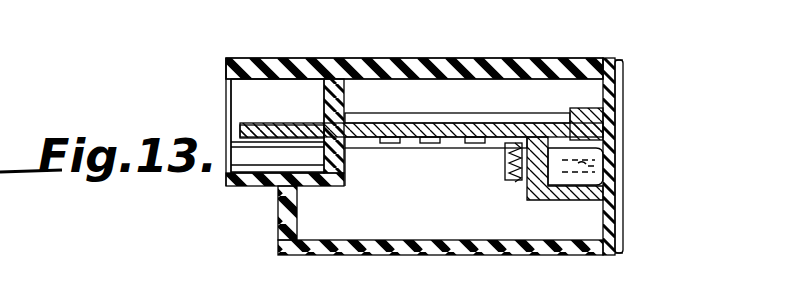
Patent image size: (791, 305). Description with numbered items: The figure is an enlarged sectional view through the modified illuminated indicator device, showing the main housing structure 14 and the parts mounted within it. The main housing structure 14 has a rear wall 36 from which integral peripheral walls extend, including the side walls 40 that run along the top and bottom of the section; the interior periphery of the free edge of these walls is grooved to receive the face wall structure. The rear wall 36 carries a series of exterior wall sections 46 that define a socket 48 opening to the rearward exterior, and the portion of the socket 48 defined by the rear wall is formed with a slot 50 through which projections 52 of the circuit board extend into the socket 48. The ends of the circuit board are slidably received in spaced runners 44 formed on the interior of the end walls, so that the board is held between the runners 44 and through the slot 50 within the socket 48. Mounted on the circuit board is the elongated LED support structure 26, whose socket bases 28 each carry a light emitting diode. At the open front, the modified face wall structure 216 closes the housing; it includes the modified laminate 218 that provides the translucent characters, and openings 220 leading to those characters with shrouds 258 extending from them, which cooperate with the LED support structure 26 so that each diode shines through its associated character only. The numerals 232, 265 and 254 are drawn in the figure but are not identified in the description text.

The main housing structure 14 is at (508, 57).
The side walls 40 is at (446, 60).
The exterior wall sections 46 is at (293, 60).
The rear wall 36 is at (278, 238).
The projections 52 is at (258, 128).
The slot 50 is at (314, 130).
The socket 48 is at (233, 167).
The runners 44 is at (362, 132).
The socket bases 28 is at (516, 172).
The LED support structure 26 is at (522, 190).
The shrouds 258 is at (576, 200).
The cylindrical element 232 is at (625, 162).
The openings 220 is at (626, 150).
The modified face wall structure 216 is at (624, 111).
The modified laminate 218 is at (621, 205).
The plate upper corner 265 is at (619, 62).
The plate lower corner 254 is at (620, 252).